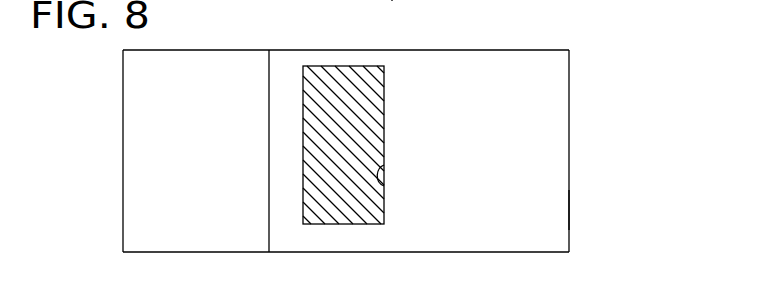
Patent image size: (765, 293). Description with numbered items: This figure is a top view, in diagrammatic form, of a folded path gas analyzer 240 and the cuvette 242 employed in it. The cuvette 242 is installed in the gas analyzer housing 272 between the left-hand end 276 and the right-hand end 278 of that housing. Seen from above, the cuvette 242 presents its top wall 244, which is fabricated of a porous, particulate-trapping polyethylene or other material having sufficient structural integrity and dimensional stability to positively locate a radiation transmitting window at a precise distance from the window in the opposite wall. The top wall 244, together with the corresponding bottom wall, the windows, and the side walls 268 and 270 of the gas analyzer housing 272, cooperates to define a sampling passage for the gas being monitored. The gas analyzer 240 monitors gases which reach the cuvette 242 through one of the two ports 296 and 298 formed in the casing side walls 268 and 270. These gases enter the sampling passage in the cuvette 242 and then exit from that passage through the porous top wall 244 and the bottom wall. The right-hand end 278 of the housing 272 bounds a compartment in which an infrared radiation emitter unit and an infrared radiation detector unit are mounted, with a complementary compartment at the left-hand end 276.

The folded path gas analyzer 240 is at (361, 146).
The cuvette 242 is at (354, 112).
The top wall 244 is at (384, 107).
The side wall 268 is at (398, 253).
The side wall 270 is at (497, 50).
The gas analyzer housing 272 is at (583, 210).
The left-hand end 276 is at (123, 118).
The right-hand end 278 is at (569, 152).
The port 296 is at (384, 186).
The port 298 is at (392, 0).